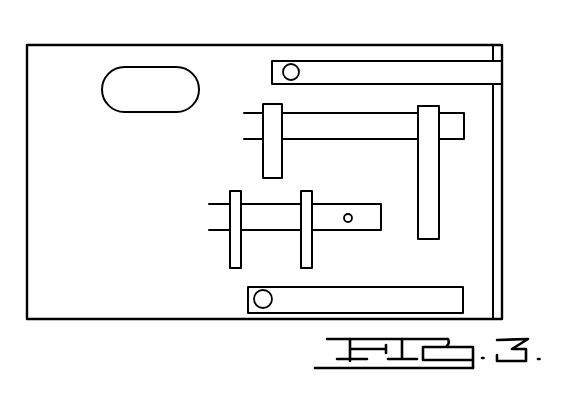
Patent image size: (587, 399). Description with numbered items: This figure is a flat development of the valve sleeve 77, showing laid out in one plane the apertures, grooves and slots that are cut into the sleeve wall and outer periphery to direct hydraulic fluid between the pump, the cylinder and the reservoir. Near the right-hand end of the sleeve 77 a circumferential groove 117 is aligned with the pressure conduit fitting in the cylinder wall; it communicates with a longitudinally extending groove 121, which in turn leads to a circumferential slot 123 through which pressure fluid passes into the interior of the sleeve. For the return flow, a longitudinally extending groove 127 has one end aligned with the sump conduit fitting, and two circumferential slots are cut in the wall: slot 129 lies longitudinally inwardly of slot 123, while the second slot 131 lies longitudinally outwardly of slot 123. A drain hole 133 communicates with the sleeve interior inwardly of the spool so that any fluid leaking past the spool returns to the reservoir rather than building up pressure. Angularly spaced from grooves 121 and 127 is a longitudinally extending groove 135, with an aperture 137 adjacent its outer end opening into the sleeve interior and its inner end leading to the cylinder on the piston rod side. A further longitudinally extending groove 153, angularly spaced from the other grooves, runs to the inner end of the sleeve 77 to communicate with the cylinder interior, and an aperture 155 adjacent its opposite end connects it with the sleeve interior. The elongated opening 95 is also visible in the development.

The sleeve 77 is at (103, 308).
The slot 95 is at (167, 108).
The groove 117 is at (436, 172).
The longitudinally extending groove 121 is at (397, 137).
The slot 123 is at (265, 159).
The longitudinally extending groove 127 is at (328, 230).
The slot 129 is at (313, 200).
The second slot 131 is at (232, 254).
The drain hole 133 is at (353, 221).
The longitudinally extending groove 135 is at (292, 311).
The aperture 137 is at (264, 304).
The longitudinally extending groove 153 is at (454, 62).
The aperture 155 is at (296, 69).